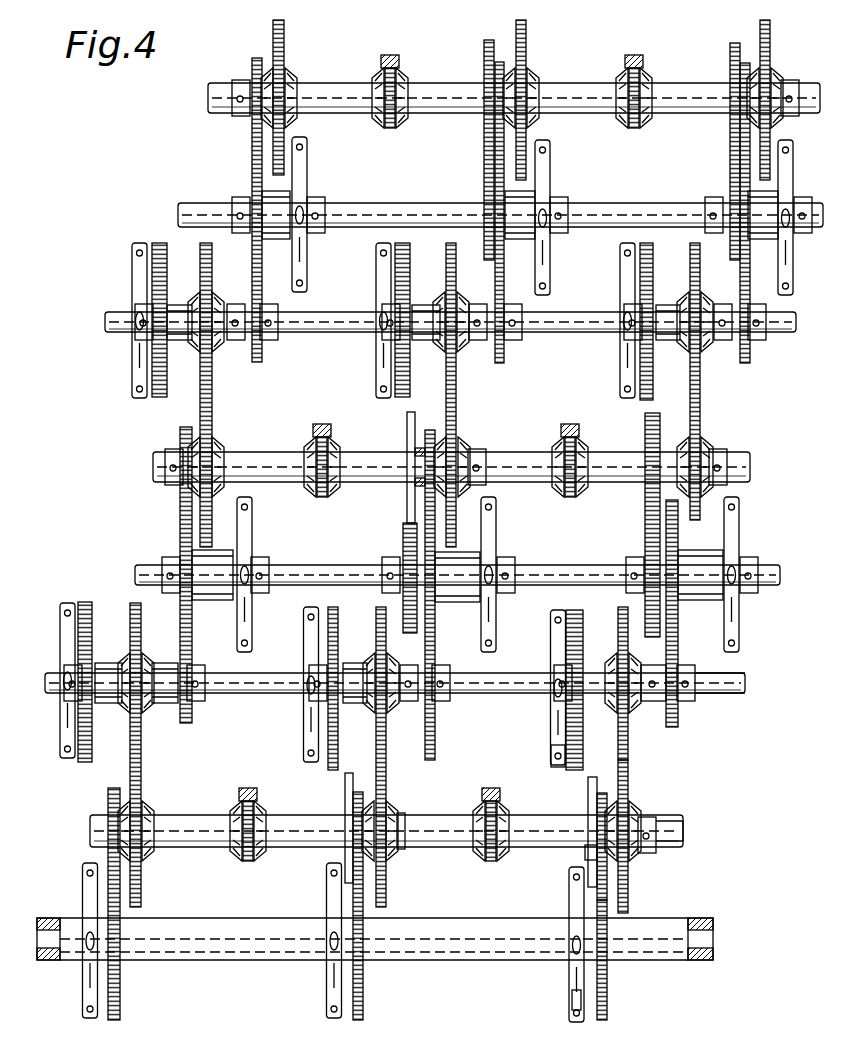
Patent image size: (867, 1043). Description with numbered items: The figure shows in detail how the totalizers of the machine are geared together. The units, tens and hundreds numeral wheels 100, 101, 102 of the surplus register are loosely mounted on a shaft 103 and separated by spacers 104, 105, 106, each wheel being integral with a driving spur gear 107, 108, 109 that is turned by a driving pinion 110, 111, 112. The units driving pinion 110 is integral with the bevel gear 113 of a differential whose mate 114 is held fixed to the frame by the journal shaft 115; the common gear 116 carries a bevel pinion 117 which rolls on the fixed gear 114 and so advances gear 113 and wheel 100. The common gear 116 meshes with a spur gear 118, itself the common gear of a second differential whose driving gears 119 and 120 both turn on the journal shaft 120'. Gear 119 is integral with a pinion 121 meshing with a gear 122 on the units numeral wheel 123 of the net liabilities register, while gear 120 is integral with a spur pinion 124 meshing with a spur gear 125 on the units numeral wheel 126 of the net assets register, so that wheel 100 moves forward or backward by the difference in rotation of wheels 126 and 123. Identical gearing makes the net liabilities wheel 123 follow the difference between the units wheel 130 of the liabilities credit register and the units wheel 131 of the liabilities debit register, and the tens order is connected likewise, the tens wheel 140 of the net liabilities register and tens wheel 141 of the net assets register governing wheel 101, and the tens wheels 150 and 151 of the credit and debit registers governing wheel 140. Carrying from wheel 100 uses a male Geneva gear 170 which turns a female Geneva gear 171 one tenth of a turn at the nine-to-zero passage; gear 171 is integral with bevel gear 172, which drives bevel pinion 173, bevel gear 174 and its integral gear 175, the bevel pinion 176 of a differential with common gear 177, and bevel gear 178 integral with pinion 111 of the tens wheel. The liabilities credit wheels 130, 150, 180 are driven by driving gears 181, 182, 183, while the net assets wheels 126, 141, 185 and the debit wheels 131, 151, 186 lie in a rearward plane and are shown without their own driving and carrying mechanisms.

The units numeral wheel of the surplus register 100 is at (569, 978).
The tens numeral wheel of the surplus register 101 is at (326, 975).
The hundreds numeral wheel of the surplus register 102 is at (82, 975).
The shaft 103 is at (713, 940).
The spacer 104 is at (460, 960).
The spacer 105 is at (223, 960).
The spacer 106 is at (678, 960).
The driving spur gear 107 is at (607, 1010).
The driving gear 108 is at (363, 1000).
The driving spur gear 109 is at (120, 998).
The driving pinion 110 is at (588, 795).
The driving pinion 111 is at (345, 793).
The driving pinion 112 is at (128, 800).
The bevel gear 113 is at (588, 852).
The mate bevel gear 114 is at (656, 822).
The fixed journal shaft 115 is at (683, 833).
The common gear 116 is at (630, 772).
The bevel pinion 117 is at (633, 805).
The spur gear 118 is at (619, 618).
The driving gear 119 is at (640, 666).
The driving gear 120 is at (604, 670).
The journal shaft 120' is at (744, 679).
The pinion 121 is at (678, 647).
The gear 122 is at (672, 617).
The units numeral wheel of the net liabilities register 123 is at (740, 546).
The spur pinion 124 is at (566, 730).
The spur gear 125 is at (551, 752).
The units numeral wheel of the net assets register 126 is at (551, 714).
The units numeral wheel of the liabilities credit register 130 is at (793, 164).
The units numeral wheel of the liabilities debit register 131 is at (622, 272).
The tens numeral wheel of the net liabilities register 140 is at (497, 546).
The tens numeral wheel of the net assets register 141 is at (303, 714).
The tens numeral wheel of the liabilities credit register 150 is at (550, 178).
The tens numeral wheel of the liabilities debit register 151 is at (377, 350).
The male Geneva carrying gear 170 is at (572, 1002).
The female Geneva gear 171 is at (597, 805).
The bevel gear 172 is at (503, 812).
The bevel pinion 173 is at (484, 795).
The bevel gear 174 is at (480, 861).
The bevel gear 175 is at (402, 815).
The bevel pinion 176 is at (389, 803).
The common gear 177 is at (386, 770).
The bevel gear 178 is at (372, 803).
The hundreds numeral wheel of the liabilities credit register 180 is at (305, 160).
The units driving gear 181 is at (760, 30).
The tens driving gear 182 is at (529, 30).
The hundreds driving gear 183 is at (284, 33).
The hundreds numeral wheel of the net assets register 185 is at (65, 762).
The hundreds numeral wheel of the liabilities debit register 186 is at (132, 376).